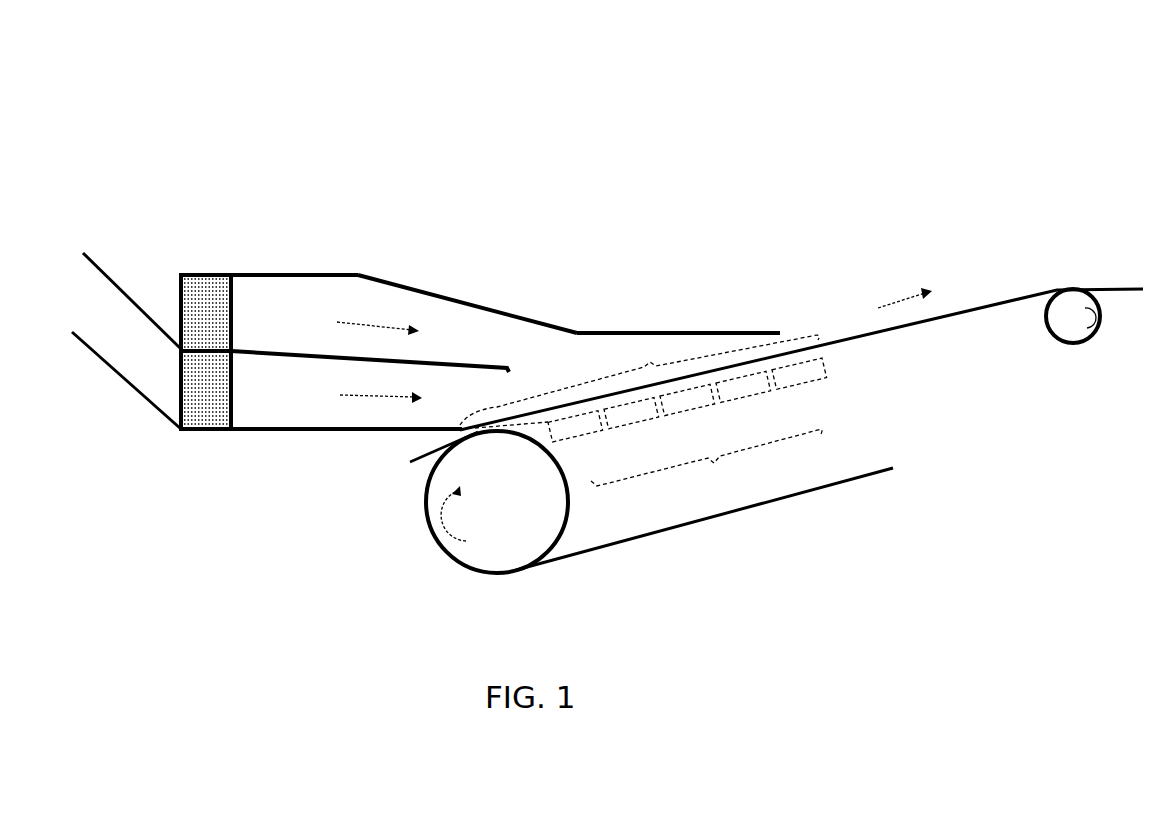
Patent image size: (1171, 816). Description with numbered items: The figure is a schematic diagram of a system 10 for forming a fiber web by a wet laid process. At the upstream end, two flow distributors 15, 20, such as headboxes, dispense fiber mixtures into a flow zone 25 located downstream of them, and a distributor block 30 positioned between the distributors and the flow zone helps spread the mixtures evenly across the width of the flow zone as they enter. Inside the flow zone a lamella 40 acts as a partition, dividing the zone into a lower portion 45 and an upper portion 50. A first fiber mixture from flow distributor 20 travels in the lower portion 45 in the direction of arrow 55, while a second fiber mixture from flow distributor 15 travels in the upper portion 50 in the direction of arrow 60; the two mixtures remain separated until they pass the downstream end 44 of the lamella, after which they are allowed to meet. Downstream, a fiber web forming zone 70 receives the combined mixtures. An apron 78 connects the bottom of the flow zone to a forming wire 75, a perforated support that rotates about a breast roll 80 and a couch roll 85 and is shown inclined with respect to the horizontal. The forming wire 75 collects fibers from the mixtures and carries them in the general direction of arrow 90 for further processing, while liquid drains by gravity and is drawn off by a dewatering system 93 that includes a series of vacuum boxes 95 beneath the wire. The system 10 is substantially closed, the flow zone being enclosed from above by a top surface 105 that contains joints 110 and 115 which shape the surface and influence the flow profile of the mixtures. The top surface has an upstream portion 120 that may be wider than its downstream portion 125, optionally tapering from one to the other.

The system 10 is at (150, 87).
The flow distributor 15 is at (120, 291).
The flow distributor 20 is at (112, 369).
The flow zone 25 is at (245, 308).
The distributor block 30 is at (204, 416).
The lamella 40 is at (434, 360).
The downstream end of the lamella 44 is at (502, 366).
The lower portion of the flow zone 45 is at (257, 399).
The upper portion of the flow zone 50 is at (277, 341).
The arrow 55 is at (381, 387).
The arrow 60 is at (270, 458).
The fiber web forming zone 70 is at (650, 362).
The forming wire 75 is at (992, 305).
The apron 78 is at (430, 455).
The breast roll 80 is at (571, 503).
The couch roll 85 is at (1103, 318).
The arrow 90 is at (893, 300).
The dewatering system 93 is at (706, 462).
The vacuum boxes 95 is at (737, 382).
The top surface 105 is at (279, 273).
The joint 110 is at (363, 273).
The joint 115 is at (579, 331).
The upstream portion of the top surface 120 is at (240, 273).
The downstream portion of the top surface 125 is at (757, 331).